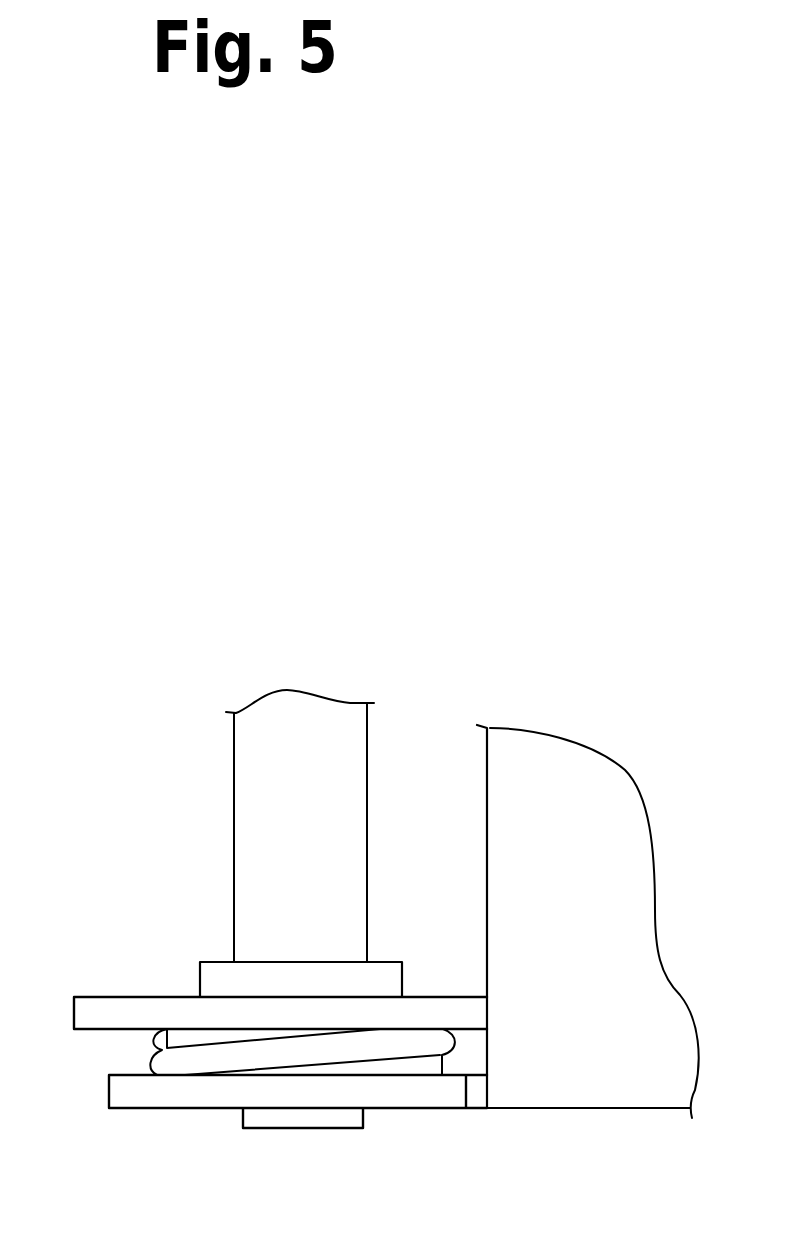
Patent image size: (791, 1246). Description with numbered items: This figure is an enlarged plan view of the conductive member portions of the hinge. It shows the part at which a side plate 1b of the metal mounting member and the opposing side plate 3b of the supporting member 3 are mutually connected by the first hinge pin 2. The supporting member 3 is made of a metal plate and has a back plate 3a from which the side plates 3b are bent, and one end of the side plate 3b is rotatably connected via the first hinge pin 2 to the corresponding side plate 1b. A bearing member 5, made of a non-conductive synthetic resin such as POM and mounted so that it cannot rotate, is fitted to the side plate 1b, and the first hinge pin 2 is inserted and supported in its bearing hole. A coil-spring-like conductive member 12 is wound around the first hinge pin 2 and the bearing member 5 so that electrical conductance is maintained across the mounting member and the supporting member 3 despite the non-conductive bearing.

The first hinge pin 2 is at (245, 797).
The bearing member 5 is at (207, 977).
The side plate 1b is at (97, 1019).
The conductive member 12 is at (188, 1060).
The side plate 3b is at (410, 1093).
The supporting member 3 is at (609, 921).
The back plate 3a is at (633, 838).